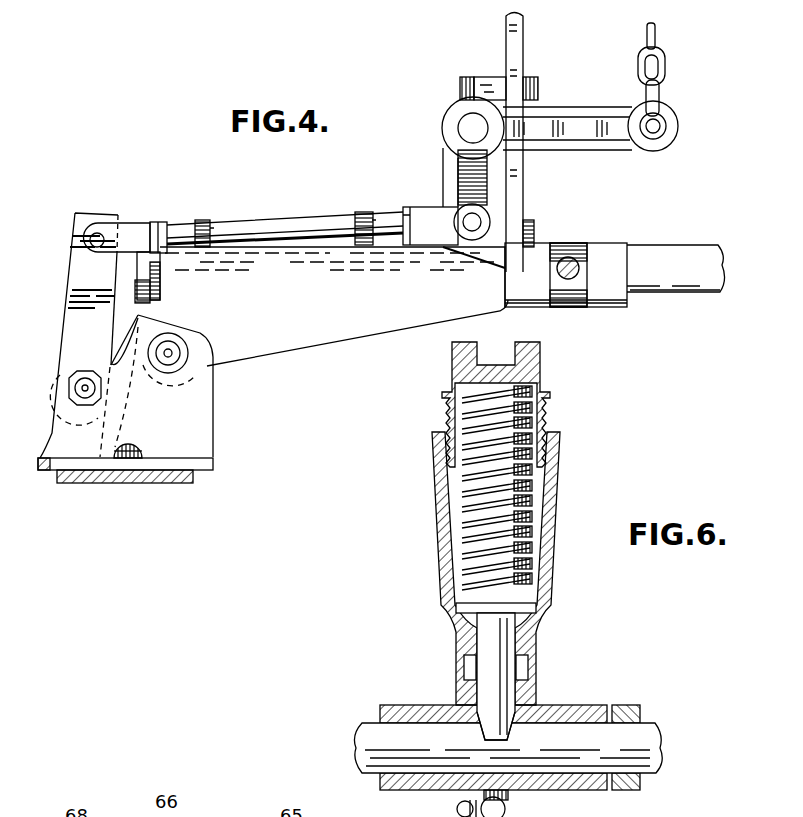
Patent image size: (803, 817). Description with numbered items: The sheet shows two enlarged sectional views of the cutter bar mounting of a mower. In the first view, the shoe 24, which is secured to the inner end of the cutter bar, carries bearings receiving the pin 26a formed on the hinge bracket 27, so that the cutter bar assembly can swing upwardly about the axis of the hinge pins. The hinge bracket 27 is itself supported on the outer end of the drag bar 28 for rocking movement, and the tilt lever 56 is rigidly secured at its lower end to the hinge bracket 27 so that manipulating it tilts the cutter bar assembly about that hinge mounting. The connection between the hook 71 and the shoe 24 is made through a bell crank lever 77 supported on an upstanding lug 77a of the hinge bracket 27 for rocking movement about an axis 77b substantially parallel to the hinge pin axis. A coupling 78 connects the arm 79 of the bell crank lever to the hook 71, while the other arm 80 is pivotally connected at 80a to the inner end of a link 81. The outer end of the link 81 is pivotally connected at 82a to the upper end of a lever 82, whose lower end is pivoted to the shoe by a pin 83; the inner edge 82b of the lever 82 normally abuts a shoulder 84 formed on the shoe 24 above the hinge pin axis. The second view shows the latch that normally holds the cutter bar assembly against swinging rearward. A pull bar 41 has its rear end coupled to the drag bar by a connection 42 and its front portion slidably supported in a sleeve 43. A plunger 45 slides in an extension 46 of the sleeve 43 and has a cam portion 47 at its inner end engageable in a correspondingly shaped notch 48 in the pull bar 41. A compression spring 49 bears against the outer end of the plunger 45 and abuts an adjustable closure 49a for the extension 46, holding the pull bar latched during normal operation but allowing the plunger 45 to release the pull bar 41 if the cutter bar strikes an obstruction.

In FIG. 4, the shoe 24 is at (193, 467).
In FIG. 4, the pin 26a is at (171, 355).
In FIG. 4, the hinge bracket 27 is at (330, 343).
In FIG. 4, the drag bar 28 is at (675, 250).
In FIG. 4, the pull bar 41 is at (587, 267).
In FIG. 6, the pull bar 41 is at (647, 742).
In FIG. 4, the connection 42 is at (578, 312).
In FIG. 6, the sleeve 43 is at (587, 780).
In FIG. 6, the plunger 45 is at (510, 646).
In FIG. 6, the extension 46 is at (555, 556).
In FIG. 6, the cam portion 47 is at (527, 720).
In FIG. 6, the notch 48 is at (480, 725).
In FIG. 6, the compression spring 49 is at (528, 520).
In FIG. 6, the adjustable closure 49a is at (548, 372).
In FIG. 4, the tilt lever 56 is at (523, 48).
In FIG. 4, the hook 71 is at (655, 33).
In FIG. 4, the bell crank lever 77 is at (590, 97).
In FIG. 4, the upstanding lug 77a is at (442, 168).
In FIG. 4, the axis 77b is at (470, 128).
In FIG. 4, the coupling 78 is at (658, 92).
In FIG. 4, the arm 79 is at (679, 125).
In FIG. 4, the arm 80 is at (462, 185).
In FIG. 4, the pivotal connection 80a is at (473, 222).
In FIG. 4, the link 81 is at (313, 223).
In FIG. 4, the lever 82 is at (78, 281).
In FIG. 4, the pivotal connection 82a is at (97, 240).
In FIG. 4, the inner edge 82b is at (117, 322).
In FIG. 4, the pin 83 is at (82, 388).
In FIG. 4, the shoulder 84 is at (133, 328).